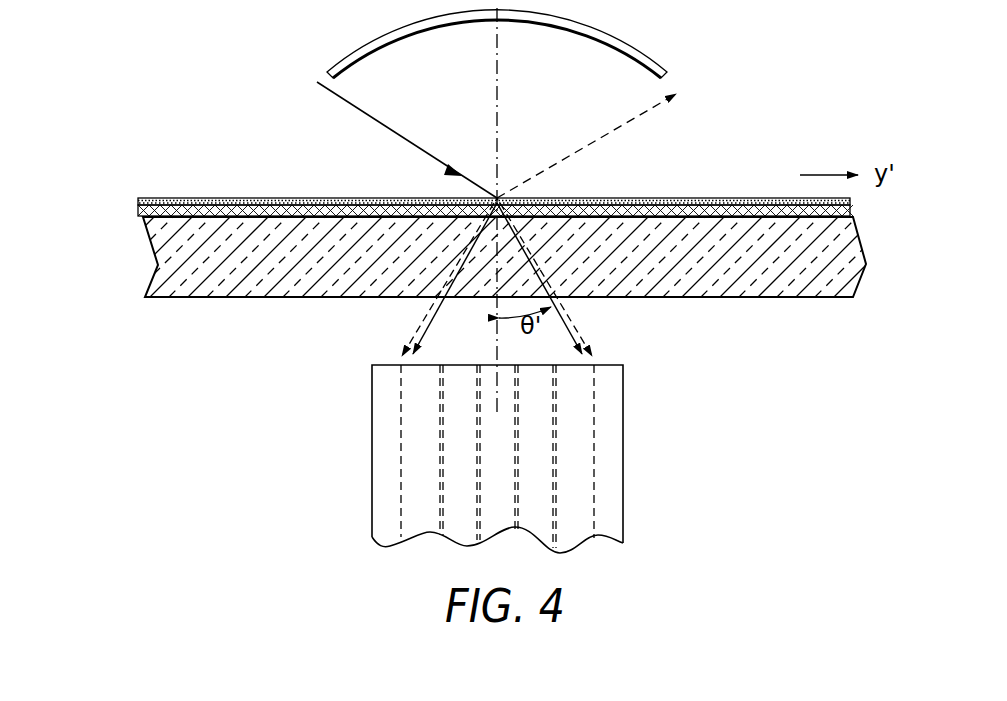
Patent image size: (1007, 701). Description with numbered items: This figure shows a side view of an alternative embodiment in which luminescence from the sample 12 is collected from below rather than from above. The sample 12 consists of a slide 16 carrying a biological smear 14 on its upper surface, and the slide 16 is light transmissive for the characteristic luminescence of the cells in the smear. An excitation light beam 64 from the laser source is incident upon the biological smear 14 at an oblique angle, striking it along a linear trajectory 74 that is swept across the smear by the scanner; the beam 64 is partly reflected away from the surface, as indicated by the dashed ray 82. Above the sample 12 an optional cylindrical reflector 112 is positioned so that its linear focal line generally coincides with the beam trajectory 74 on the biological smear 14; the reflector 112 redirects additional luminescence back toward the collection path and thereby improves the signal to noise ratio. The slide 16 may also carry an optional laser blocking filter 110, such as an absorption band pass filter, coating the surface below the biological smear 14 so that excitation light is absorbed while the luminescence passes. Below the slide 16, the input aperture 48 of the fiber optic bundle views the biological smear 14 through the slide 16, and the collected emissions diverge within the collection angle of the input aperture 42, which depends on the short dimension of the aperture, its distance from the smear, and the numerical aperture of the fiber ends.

The sample 12 is at (513, 222).
The biological smear 14 is at (190, 198).
The laser blocking filter 110 is at (143, 210).
The slide 16 is at (193, 297).
The cylindrical reflector 112 is at (612, 40).
The excitation light 64 is at (363, 113).
The reflected light beam 82 is at (632, 122).
The linear trajectory 74 is at (474, 192).
The input aperture 48 is at (612, 350).
The input aperture 42 is at (377, 407).